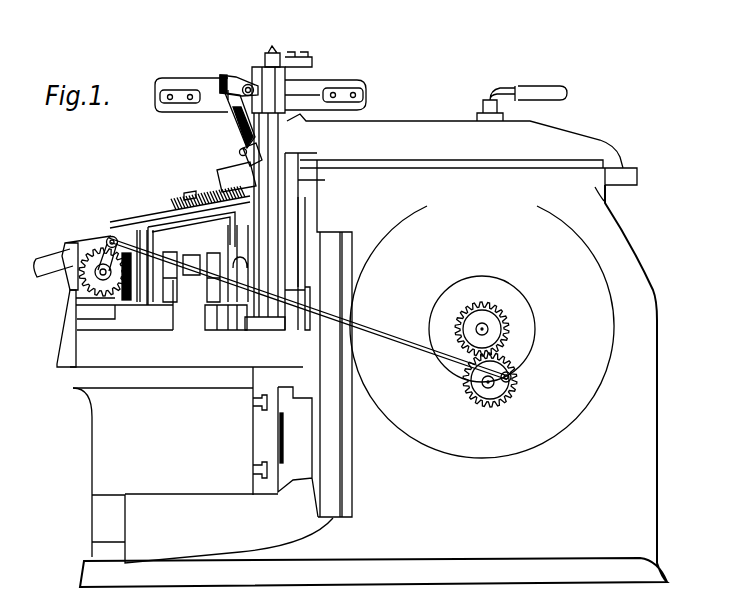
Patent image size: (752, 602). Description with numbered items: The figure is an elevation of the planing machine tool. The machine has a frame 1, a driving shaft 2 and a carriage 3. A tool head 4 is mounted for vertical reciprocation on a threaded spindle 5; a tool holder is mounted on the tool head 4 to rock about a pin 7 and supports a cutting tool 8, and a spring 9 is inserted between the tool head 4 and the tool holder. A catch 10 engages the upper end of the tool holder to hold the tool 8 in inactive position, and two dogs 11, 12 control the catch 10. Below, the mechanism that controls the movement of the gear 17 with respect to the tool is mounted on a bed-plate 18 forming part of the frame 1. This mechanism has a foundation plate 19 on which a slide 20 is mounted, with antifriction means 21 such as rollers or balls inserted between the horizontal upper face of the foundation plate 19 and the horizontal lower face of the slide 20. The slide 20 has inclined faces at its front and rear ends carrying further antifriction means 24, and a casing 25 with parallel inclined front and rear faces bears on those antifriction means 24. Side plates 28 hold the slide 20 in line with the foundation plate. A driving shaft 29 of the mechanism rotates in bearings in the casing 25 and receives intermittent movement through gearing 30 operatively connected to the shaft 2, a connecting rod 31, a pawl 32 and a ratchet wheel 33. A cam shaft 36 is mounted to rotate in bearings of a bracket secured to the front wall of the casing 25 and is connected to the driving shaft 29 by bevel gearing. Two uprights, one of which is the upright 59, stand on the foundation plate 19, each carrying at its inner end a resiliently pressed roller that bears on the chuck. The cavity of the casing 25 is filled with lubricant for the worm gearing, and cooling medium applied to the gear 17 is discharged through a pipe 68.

The frame 1 is at (657, 330).
The driving shaft 2 is at (497, 320).
The carriage 3 is at (565, 150).
The tool head 4 is at (273, 142).
The threaded spindle 5 is at (276, 55).
The pin 7 is at (239, 152).
The cutting tool 8 is at (218, 186).
The spring 9 is at (237, 128).
The catch 10 is at (229, 77).
The dog 11 is at (181, 90).
The dog 12 is at (346, 92).
The gear 17 is at (170, 212).
The bed-plate 18 is at (110, 362).
The foundation plate 19 is at (297, 333).
The slide 20 is at (82, 318).
The antifriction means 21 is at (88, 328).
The antifriction means 24 is at (85, 307).
The casing 25 is at (143, 224).
The side plates 28 is at (58, 358).
The driving shaft 29 is at (95, 275).
The gearing 30 is at (508, 360).
The connecting rod 31 is at (377, 333).
The pawl 32 is at (109, 237).
The ratchet wheel 33 is at (88, 262).
The cam shaft 36 is at (223, 261).
The upright 59 is at (272, 238).
The pipe 68 is at (40, 253).